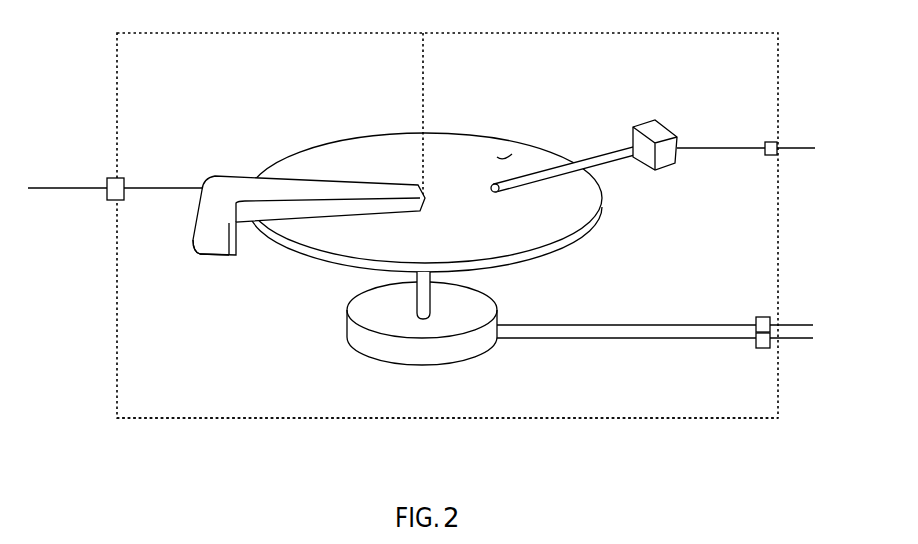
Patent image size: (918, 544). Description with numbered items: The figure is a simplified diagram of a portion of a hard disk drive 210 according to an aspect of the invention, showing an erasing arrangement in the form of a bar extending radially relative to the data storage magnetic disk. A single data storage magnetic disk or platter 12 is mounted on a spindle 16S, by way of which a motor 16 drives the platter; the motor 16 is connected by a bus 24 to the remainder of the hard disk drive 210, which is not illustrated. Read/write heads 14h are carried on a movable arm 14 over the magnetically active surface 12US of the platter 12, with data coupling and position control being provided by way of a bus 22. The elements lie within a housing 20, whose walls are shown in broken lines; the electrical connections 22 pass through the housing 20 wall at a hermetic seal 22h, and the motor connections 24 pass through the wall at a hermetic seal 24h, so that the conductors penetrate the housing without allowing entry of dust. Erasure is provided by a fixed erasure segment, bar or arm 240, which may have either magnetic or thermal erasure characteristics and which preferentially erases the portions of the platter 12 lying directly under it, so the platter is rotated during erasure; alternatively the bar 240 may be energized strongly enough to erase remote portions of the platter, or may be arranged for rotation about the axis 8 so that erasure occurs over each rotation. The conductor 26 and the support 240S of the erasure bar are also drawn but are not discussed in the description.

The axis 8 is at (425, 78).
The data storage magnetic disk 12 is at (302, 252).
The magnetically active surface 12US is at (512, 154).
The movable arm 14 is at (592, 153).
The read/write heads 14h is at (497, 193).
The motor 16 is at (353, 333).
The spindle 16S is at (415, 278).
The housing 20 is at (779, 90).
The bus 22 is at (700, 146).
The hermetic seal 22h is at (770, 158).
The bus 24 is at (673, 322).
The hermetic seal 24h is at (760, 316).
The arm lead line 26 is at (70, 187).
The hard disk drive 210 is at (270, 450).
The erasure bar 240 is at (288, 177).
The arm support leg 240S is at (195, 251).